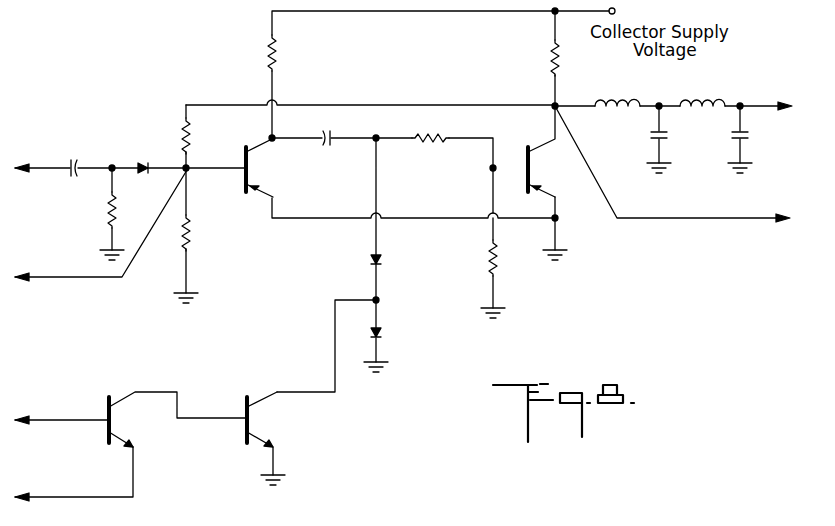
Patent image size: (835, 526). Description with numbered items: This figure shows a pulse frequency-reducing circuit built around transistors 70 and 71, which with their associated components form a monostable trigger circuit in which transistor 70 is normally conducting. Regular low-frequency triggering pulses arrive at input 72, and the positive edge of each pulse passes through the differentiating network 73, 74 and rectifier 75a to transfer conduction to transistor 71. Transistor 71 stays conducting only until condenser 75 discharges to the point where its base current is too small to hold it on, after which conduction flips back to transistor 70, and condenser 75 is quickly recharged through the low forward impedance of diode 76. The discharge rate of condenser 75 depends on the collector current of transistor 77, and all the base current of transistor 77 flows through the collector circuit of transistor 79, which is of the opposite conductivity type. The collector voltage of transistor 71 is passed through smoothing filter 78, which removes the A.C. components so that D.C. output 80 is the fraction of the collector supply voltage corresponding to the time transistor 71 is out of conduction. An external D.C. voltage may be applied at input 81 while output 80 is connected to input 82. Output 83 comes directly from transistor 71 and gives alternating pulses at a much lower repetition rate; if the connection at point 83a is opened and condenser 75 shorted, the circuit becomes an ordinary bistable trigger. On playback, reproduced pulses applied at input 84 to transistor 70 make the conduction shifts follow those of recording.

The transistor 70 is at (249, 173).
The transistor 71 is at (531, 173).
The input 72 is at (42, 181).
The differentiating network 73 is at (77, 160).
The differentiating network 74 is at (108, 217).
The condenser 75 is at (326, 140).
The rectifier 75a is at (148, 158).
The diode 76 is at (382, 333).
The transistor 77 is at (247, 397).
The smoothing filter 78 is at (730, 100).
The transistor 79 is at (109, 397).
The D.C. output 80 is at (783, 118).
The input 81 is at (74, 486).
The input 82 is at (61, 433).
The output 83 is at (674, 164).
The point 83a is at (382, 262).
The input 84 is at (101, 239).